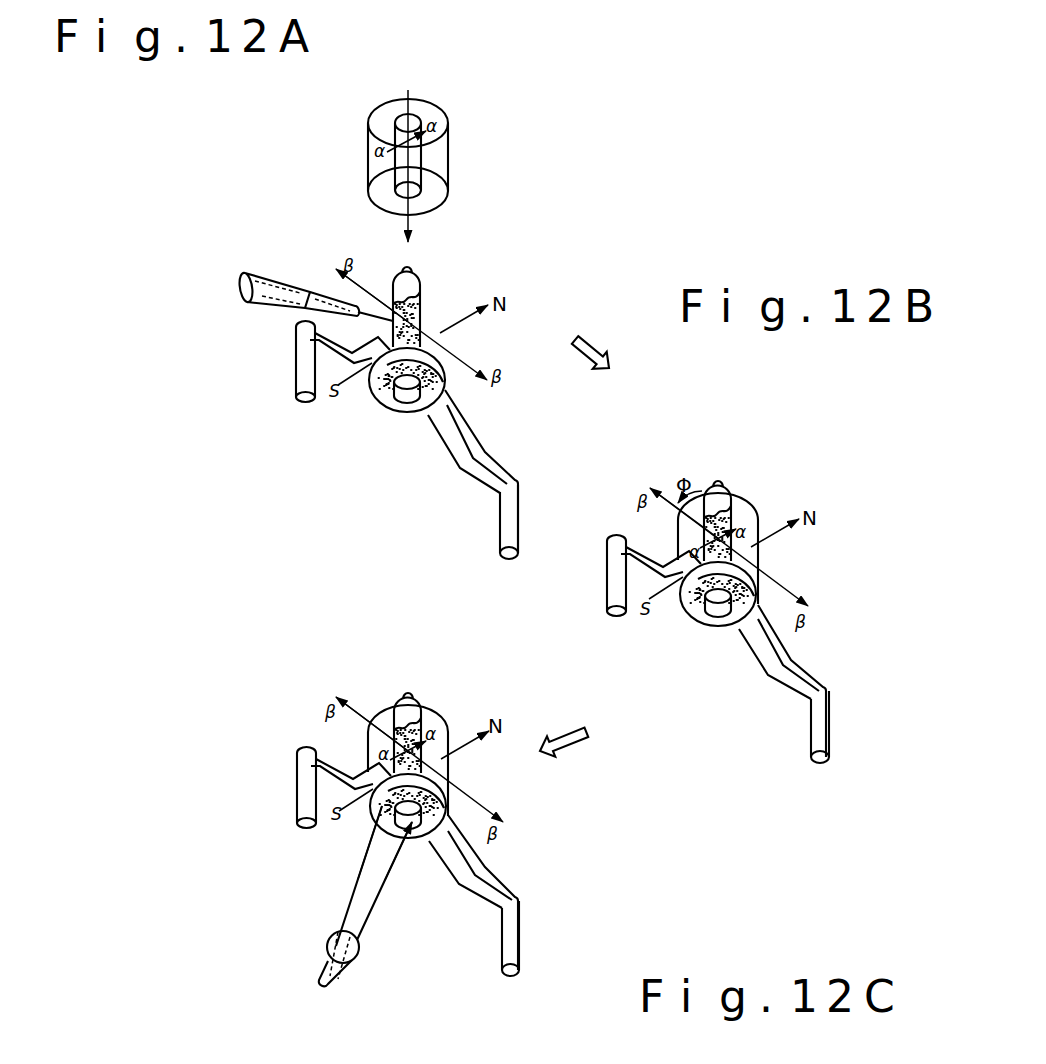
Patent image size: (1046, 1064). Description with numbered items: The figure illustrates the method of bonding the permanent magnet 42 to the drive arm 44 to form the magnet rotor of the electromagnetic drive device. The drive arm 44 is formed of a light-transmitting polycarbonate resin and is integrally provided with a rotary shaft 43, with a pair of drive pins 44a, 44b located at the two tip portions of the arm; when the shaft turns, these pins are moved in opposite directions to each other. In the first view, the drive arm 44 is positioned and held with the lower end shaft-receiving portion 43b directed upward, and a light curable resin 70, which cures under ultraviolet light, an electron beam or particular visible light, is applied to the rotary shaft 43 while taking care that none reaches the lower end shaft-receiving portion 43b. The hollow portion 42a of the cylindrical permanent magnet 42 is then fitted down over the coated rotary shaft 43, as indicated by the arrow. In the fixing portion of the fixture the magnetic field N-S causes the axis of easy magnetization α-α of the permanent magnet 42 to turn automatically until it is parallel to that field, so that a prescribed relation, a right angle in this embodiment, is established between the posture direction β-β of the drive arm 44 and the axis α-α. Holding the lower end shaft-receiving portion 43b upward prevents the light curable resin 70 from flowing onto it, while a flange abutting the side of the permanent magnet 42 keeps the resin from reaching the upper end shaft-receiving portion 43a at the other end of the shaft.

In FIG. 12A, the permanent magnet 42 is at (444, 151).
In FIG. 12B, the permanent magnet 42 is at (757, 569).
In FIG. 12C, the permanent magnet 42 is at (449, 779).
In FIG. 12A, the hollow portion 42a is at (403, 194).
In FIG. 12A, the rotary shaft 43 is at (421, 283).
In FIG. 12B, the rotary shaft 43 is at (735, 496).
In FIG. 12C, the rotary shaft 43 is at (425, 703).
In FIG. 12A, the upper end shaft-receiving portion 43a is at (408, 400).
In FIG. 12B, the upper end shaft-receiving portion 43a is at (717, 612).
In FIG. 12C, the upper end shaft-receiving portion 43a is at (407, 822).
In FIG. 12A, the lower end shaft-receiving portion 43b is at (412, 266).
In FIG. 12B, the lower end shaft-receiving portion 43b is at (718, 481).
In FIG. 12C, the lower end shaft-receiving portion 43b is at (409, 688).
In FIG. 12A, the drive arm 44 is at (478, 486).
In FIG. 12B, the drive arm 44 is at (797, 698).
In FIG. 12C, the drive arm 44 is at (486, 875).
In FIG. 12A, the drive pin 44a is at (504, 528).
In FIG. 12B, the drive pin 44a is at (811, 739).
In FIG. 12C, the drive pin 44a is at (515, 934).
In FIG. 12A, the drive pin 44b is at (308, 402).
In FIG. 12B, the drive pin 44b is at (624, 614).
In FIG. 12C, the drive pin 44b is at (314, 824).
In FIG. 12A, the light curable resin 70 is at (339, 300).
In FIG. 12C, the light curable resin 70 is at (365, 896).